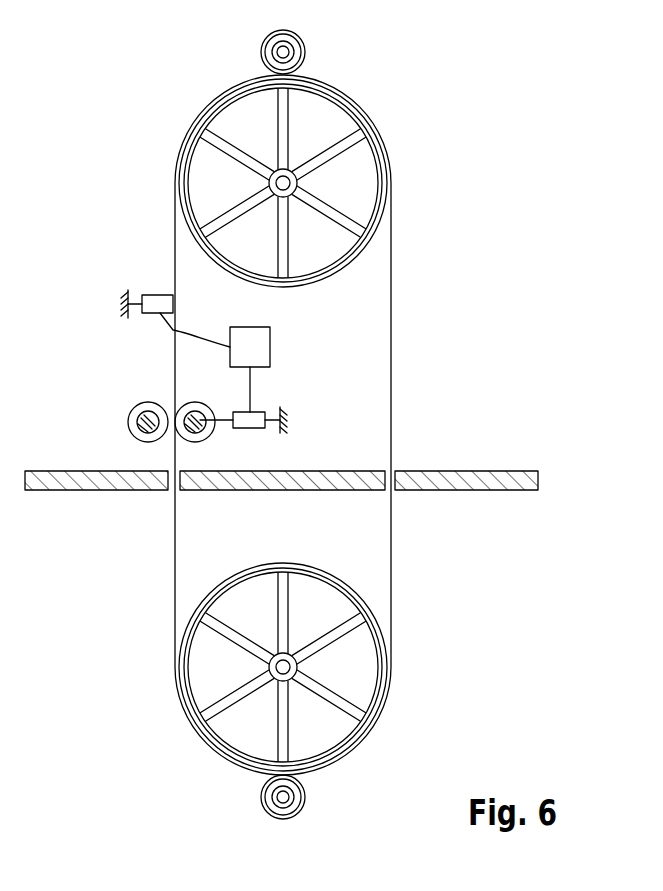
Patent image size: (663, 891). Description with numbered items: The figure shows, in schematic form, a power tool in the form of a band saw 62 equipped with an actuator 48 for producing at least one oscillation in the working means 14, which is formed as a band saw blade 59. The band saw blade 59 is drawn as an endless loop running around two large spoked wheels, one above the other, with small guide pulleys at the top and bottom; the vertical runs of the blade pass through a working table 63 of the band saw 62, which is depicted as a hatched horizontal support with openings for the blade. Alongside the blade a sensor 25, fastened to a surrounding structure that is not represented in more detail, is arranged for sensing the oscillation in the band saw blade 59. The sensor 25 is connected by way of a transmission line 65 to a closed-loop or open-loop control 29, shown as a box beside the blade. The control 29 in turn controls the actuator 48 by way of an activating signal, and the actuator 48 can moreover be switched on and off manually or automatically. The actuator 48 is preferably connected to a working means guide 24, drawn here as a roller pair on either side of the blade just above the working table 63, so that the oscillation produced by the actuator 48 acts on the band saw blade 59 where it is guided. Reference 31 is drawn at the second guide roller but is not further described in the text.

The band saw 62 is at (408, 89).
The working means 14 is at (335, 425).
The band saw blade 59 is at (391, 312).
The sensor 25 is at (135, 302).
The transmission line 65 is at (198, 333).
The closed-loop or open-loop control 29 is at (260, 345).
The actuator 48 is at (252, 428).
The working means guide 24 is at (133, 397).
The sensor roller 31 is at (223, 407).
The working table 63 is at (53, 478).